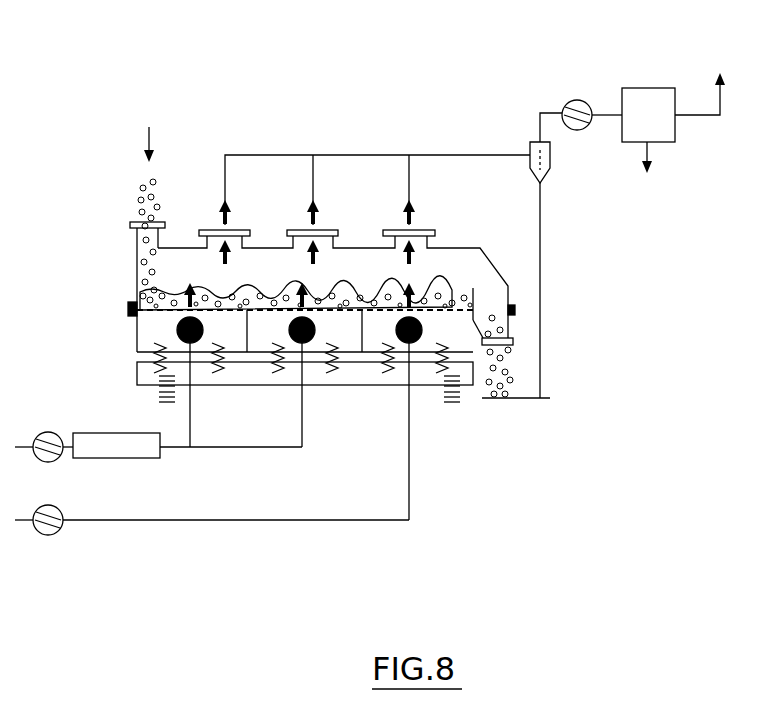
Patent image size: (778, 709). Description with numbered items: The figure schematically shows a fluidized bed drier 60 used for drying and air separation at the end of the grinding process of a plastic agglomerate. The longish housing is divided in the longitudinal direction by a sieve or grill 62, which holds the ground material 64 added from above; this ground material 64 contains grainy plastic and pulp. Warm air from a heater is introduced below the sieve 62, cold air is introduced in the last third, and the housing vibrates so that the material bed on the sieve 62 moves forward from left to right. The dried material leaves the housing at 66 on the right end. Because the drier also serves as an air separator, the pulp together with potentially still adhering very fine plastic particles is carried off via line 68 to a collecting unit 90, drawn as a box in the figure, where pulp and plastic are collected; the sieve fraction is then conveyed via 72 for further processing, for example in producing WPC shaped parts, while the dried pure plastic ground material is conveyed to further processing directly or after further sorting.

The fluidized bed drier 60 is at (188, 222).
The sieve or grill 62 is at (135, 285).
The ground material 64 is at (150, 187).
The outlet of dried material 66 is at (510, 399).
The line 68 is at (367, 157).
The gas treatment unit 90 is at (638, 103).
The sieve fraction conveying path 72 is at (652, 156).